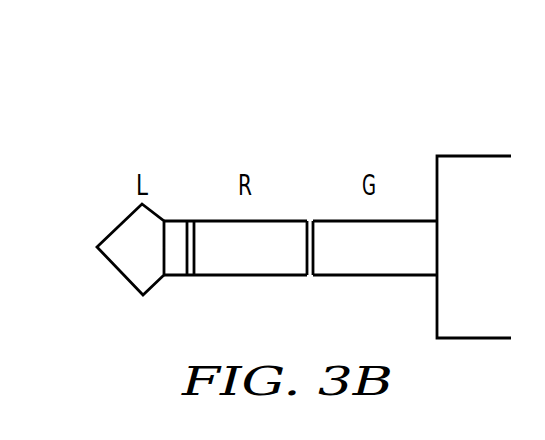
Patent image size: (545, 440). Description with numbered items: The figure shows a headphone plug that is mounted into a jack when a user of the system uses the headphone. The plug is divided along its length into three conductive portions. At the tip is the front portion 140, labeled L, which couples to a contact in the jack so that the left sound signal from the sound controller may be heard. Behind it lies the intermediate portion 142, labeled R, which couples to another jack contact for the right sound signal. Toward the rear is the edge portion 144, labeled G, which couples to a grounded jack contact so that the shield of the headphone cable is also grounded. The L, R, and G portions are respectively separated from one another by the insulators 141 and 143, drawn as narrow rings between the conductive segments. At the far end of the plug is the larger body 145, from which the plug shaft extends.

The front portion 140 is at (154, 212).
The insulator 141 is at (192, 221).
The intermediate portion 142 is at (258, 221).
The insulator 143 is at (308, 221).
The edge portion 144 is at (387, 221).
The plug body/housing 145 is at (475, 156).